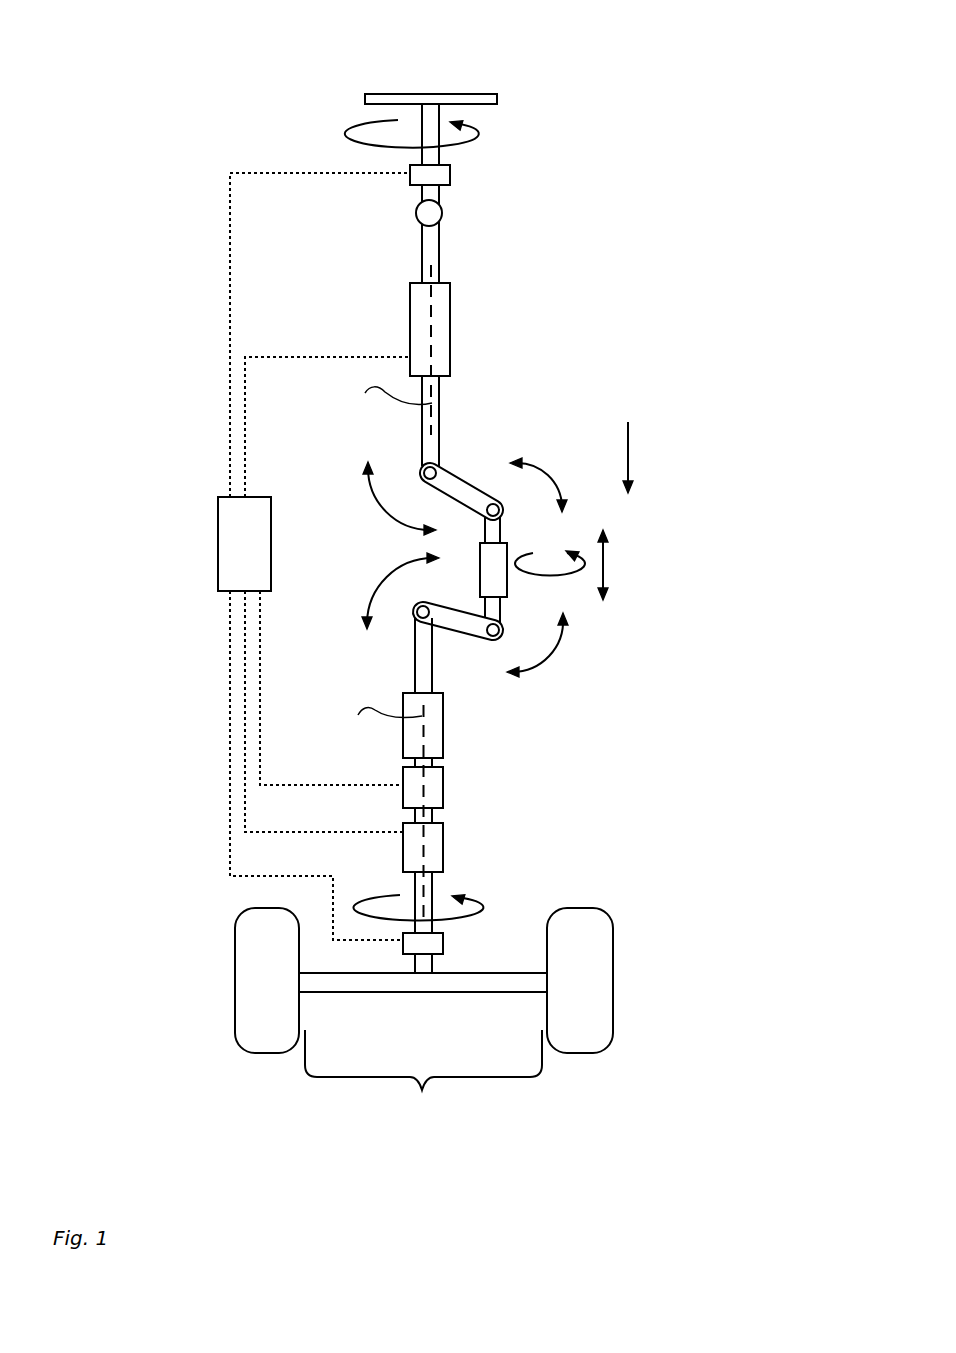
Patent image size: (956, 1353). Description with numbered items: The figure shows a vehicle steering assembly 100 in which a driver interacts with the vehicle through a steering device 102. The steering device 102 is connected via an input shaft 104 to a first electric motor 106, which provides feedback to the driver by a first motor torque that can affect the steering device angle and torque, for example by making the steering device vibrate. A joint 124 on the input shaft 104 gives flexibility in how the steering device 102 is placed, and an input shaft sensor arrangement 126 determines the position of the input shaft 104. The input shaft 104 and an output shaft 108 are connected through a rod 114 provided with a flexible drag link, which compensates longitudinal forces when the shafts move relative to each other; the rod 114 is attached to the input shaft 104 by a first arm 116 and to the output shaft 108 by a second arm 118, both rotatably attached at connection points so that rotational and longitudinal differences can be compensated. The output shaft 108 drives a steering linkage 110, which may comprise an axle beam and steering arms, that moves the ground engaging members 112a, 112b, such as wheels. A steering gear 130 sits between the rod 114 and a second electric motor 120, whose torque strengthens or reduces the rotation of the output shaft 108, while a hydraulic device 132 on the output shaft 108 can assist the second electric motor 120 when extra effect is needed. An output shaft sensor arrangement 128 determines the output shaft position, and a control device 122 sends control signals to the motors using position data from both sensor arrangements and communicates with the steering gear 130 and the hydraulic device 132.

The vehicle steering assembly 100 is at (133, 298).
The steering device 102 is at (382, 95).
The input shaft 104 is at (428, 258).
The first electric motor 106 is at (440, 312).
The output shaft 108 is at (418, 678).
The steering linkage 110 is at (423, 1054).
The ground engaging member 112a is at (270, 1038).
The ground engaging member 112b is at (580, 1038).
The rod 114 is at (507, 575).
The first arm 116 is at (453, 475).
The second arm 118 is at (453, 627).
The second electric motor 120 is at (433, 850).
The control device 122 is at (230, 545).
The joint 124 is at (440, 210).
The input shaft sensor arrangement 126 is at (438, 178).
The output shaft sensor arrangement 128 is at (437, 943).
The steering gear 130 is at (430, 743).
The hydraulic device 132 is at (428, 785).